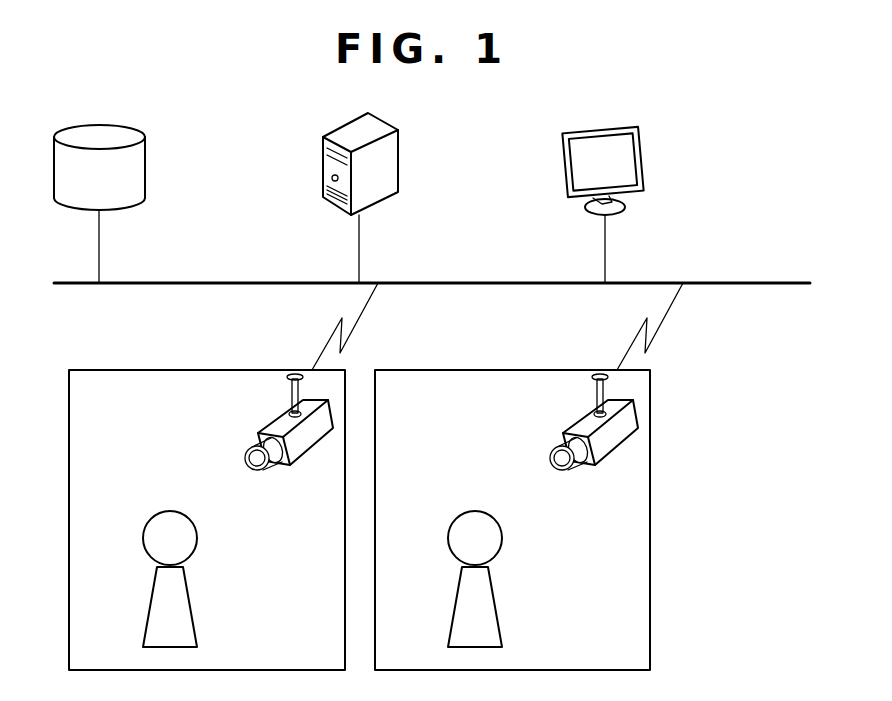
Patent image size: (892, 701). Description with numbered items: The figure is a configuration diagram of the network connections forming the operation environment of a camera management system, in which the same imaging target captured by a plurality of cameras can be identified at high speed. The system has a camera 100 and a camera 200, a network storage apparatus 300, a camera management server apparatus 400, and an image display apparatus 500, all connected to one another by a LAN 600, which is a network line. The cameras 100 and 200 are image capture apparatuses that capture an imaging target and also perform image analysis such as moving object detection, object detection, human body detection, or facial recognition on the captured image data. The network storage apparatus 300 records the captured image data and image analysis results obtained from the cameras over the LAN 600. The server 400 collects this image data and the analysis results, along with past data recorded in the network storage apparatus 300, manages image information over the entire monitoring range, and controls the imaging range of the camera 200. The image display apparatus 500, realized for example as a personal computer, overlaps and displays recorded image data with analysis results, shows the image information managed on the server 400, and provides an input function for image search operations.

The camera 100 is at (278, 418).
The camera 200 is at (583, 418).
The network storage apparatus 300 is at (147, 166).
The camera management server apparatus 400 is at (399, 160).
The image display apparatus 500 is at (644, 154).
The LAN 600 is at (771, 285).